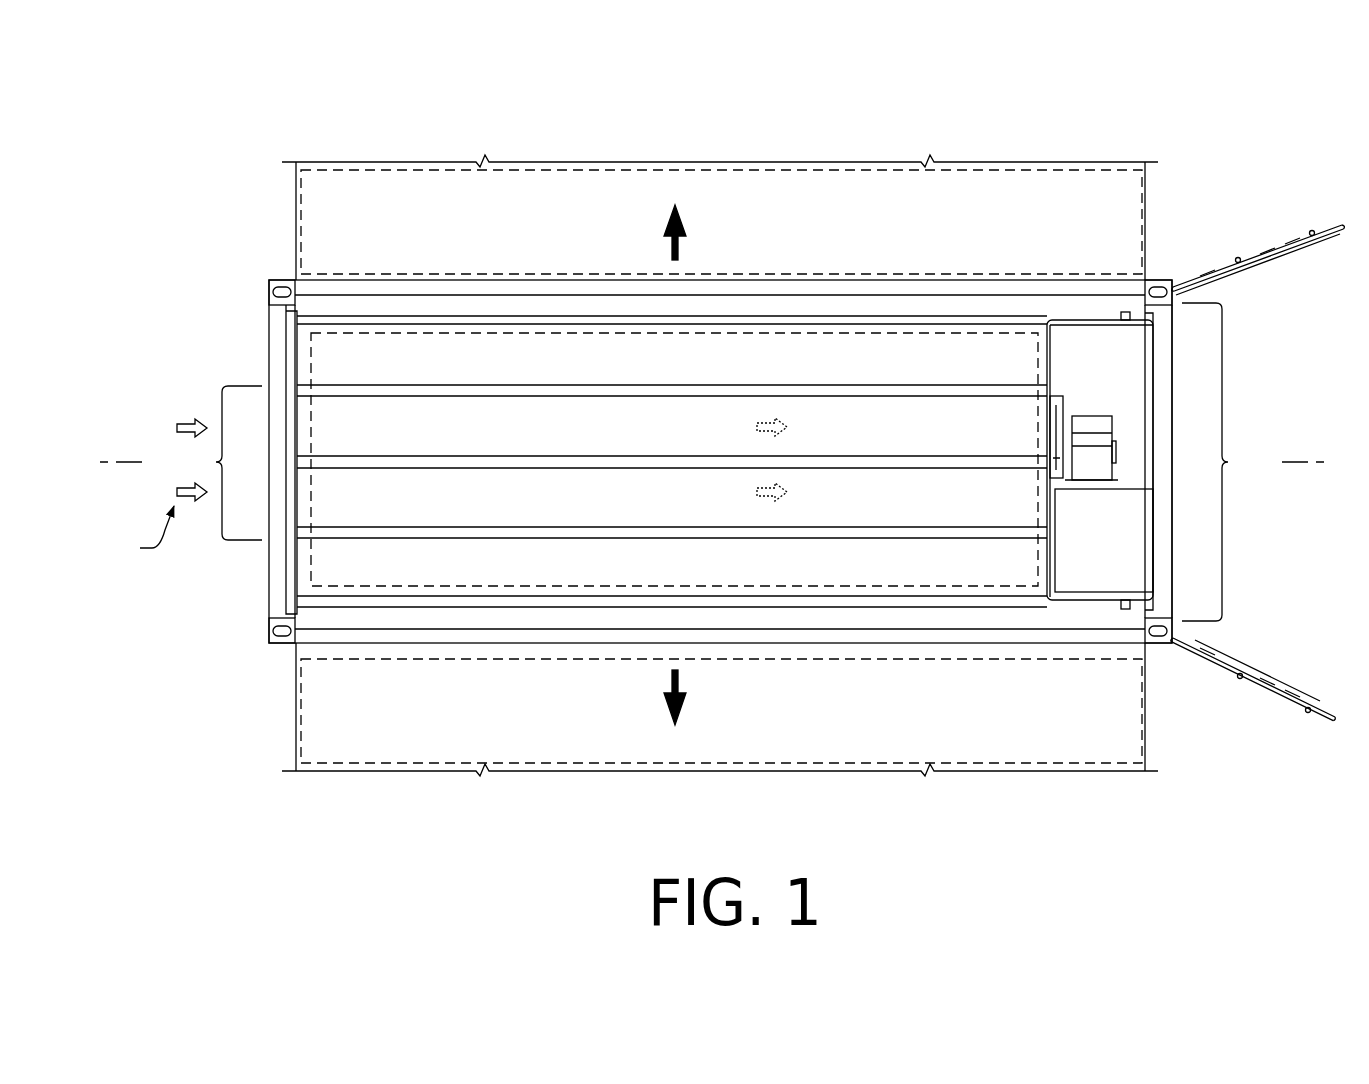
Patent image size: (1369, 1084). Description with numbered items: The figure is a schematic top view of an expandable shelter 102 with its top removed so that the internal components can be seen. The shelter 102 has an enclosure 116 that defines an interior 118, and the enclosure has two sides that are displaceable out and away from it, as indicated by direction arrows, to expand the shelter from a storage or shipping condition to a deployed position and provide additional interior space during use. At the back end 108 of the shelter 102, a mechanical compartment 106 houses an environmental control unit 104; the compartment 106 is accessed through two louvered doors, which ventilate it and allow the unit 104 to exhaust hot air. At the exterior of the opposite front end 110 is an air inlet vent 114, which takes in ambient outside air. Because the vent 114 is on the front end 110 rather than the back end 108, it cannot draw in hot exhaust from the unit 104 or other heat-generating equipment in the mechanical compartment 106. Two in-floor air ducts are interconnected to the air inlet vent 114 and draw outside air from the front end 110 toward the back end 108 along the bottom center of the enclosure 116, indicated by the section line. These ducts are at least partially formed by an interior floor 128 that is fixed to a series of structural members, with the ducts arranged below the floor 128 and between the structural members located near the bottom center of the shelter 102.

The expandable shelter 102 is at (155, 103).
The environmental control unit (ECU) 104 is at (1104, 540).
The mechanical compartment 106 is at (1160, 462).
The back end 108 is at (1240, 428).
The front end 110 is at (162, 428).
The air inlet vent 114 is at (218, 463).
The enclosure 116 is at (268, 280).
The interior 118 is at (310, 588).
The interior floor 128 is at (359, 416).